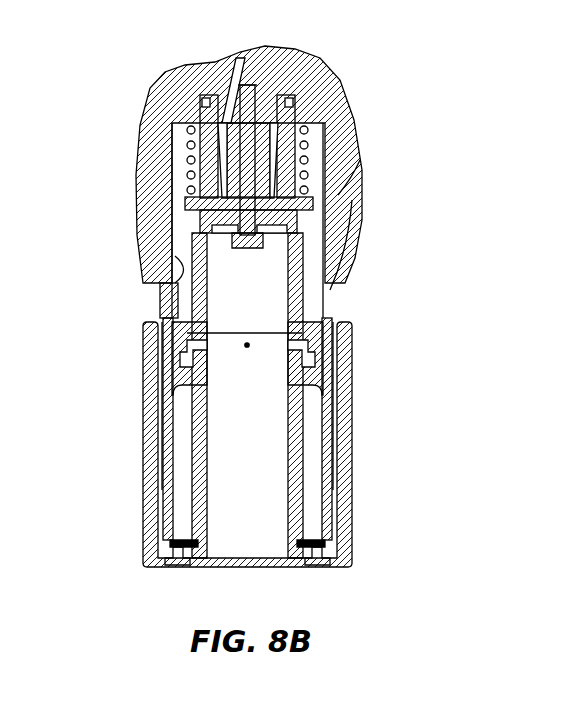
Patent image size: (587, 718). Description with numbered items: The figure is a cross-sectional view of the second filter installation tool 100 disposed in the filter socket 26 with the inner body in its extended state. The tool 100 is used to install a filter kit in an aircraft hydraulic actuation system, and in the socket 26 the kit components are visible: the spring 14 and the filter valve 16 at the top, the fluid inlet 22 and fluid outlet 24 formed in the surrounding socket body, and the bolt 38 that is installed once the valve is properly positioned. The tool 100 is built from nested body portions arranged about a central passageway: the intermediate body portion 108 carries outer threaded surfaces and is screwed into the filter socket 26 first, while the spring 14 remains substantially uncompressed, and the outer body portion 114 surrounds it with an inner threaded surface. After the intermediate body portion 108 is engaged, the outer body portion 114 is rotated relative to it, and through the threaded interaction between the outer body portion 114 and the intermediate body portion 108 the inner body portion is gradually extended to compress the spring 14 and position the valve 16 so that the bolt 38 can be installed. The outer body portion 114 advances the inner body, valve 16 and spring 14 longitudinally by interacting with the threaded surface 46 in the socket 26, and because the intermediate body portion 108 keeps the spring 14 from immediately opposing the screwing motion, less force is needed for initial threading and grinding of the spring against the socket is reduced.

The spring 14 is at (300, 132).
The filter valve 16 is at (302, 170).
The fluid inlet 22 is at (348, 180).
The fluid outlet 24 is at (233, 90).
The filter socket 26 is at (232, 68).
The bolt 38 is at (272, 240).
The threaded surface 46 is at (175, 280).
The filter installation tool 100 is at (126, 469).
The intermediate body portion 108 is at (318, 318).
The outer body portion 114 is at (340, 423).